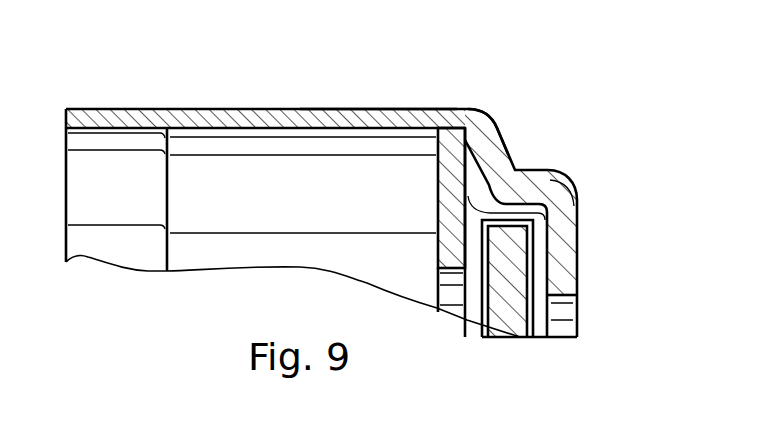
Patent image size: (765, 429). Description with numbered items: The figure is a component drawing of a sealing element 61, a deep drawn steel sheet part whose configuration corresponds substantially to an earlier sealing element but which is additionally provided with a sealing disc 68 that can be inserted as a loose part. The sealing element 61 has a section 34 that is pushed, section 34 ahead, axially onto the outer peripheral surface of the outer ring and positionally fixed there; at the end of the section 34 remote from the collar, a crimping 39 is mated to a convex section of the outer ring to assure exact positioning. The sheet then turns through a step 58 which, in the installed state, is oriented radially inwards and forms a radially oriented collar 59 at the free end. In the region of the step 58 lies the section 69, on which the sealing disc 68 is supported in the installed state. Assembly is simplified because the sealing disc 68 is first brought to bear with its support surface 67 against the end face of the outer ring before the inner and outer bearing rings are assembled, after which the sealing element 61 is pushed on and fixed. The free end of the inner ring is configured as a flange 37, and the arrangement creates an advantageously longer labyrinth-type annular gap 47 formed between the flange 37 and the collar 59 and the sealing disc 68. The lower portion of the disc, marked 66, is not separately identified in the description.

The section 34 is at (233, 108).
The crimping 39 is at (112, 108).
The sealing element 61 is at (377, 108).
The step 58 is at (512, 170).
The section 69 is at (500, 145).
The collar 59 is at (580, 235).
The support surface 67 is at (437, 167).
The lower wall section 66 is at (470, 314).
The sealing disc 68 is at (437, 250).
The flange 37 is at (508, 326).
The annular gap 47 is at (538, 324).